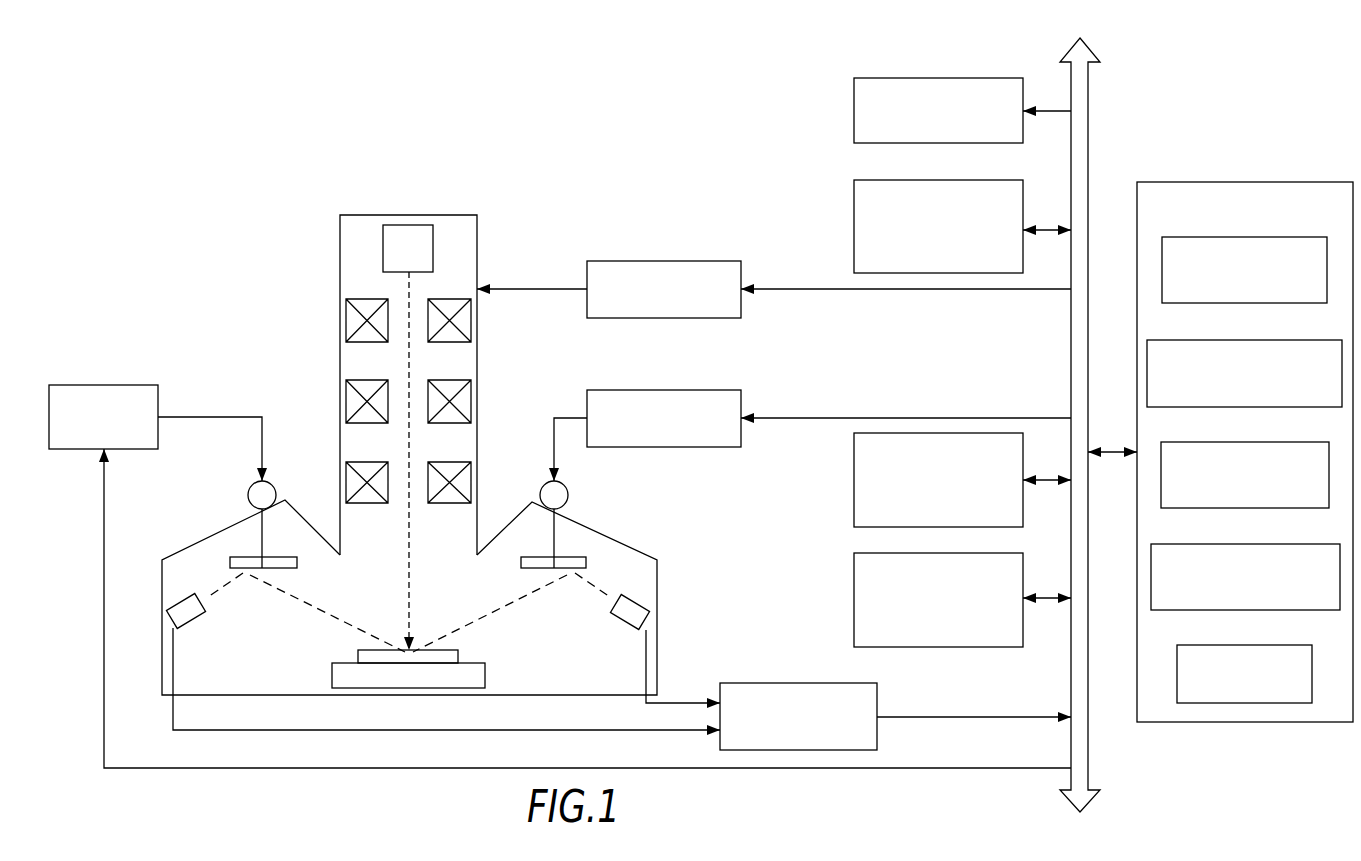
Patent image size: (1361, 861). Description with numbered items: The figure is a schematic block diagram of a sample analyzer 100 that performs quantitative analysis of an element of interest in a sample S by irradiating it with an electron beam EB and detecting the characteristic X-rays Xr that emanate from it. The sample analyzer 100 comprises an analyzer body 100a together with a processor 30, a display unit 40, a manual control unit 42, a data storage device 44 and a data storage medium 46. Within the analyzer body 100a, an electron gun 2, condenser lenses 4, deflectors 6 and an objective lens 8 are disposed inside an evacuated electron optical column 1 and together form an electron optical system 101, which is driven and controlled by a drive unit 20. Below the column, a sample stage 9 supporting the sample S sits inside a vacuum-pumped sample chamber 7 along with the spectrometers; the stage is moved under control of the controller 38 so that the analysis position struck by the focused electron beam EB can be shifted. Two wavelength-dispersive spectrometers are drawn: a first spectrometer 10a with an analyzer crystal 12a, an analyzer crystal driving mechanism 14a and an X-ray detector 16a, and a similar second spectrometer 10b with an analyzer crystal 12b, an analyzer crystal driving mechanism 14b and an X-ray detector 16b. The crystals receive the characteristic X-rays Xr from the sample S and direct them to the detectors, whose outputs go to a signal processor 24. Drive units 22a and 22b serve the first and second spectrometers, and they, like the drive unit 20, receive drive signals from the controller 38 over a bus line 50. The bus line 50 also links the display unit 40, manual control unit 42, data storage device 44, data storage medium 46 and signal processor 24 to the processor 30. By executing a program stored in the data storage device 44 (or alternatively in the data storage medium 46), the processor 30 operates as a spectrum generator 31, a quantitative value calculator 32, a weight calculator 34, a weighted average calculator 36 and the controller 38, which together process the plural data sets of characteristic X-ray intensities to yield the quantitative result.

The electron optical column 1 is at (338, 261).
The electron gun 2 is at (383, 252).
The condenser lenses 4 is at (346, 318).
The deflectors 6 is at (346, 400).
The sample chamber 7 is at (466, 369).
The objective lens 8 is at (346, 478).
The sample stage 9 is at (485, 675).
The first spectrometer 10a is at (625, 535).
The second spectrometer 10b is at (215, 530).
The analyzer crystal 12a is at (555, 570).
The analyzer crystal 12b is at (262, 570).
The analyzer crystal driving mechanism 14a is at (568, 490).
The analyzer crystal driving mechanism 14b is at (250, 488).
The X-ray detector 16a is at (622, 624).
The X-ray detector 16b is at (190, 628).
The drive unit 20 is at (688, 261).
The drive unit 22a is at (715, 390).
The drive unit 22b is at (142, 385).
The signal processor 24 is at (770, 683).
The processor 30 is at (1300, 182).
The spectrum generator 31 is at (1293, 237).
The quantitative value calculator 32 is at (1202, 340).
The weight calculator 34 is at (1195, 442).
The weighted average calculator 36 is at (1195, 544).
The controller 38 is at (1248, 645).
The display unit 40 is at (882, 78).
The manual control unit 42 is at (854, 190).
The data storage device 44 is at (854, 462).
The data storage medium 46 is at (854, 582).
The bus line 50 is at (1090, 108).
The sample analyzer 100 is at (1237, 113).
The analyzer body 100a is at (607, 163).
The electron optical system 101 is at (495, 217).
The electron beam EB is at (412, 297).
The sample S is at (355, 657).
The characteristic X-rays Xr is at (295, 592).